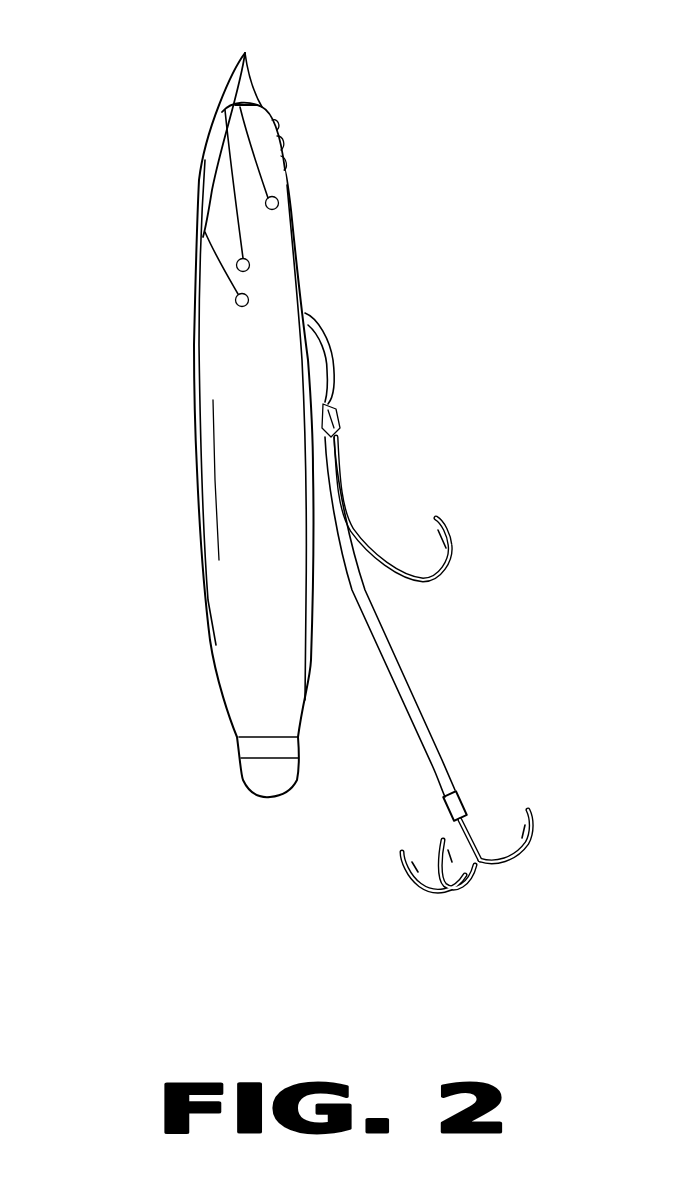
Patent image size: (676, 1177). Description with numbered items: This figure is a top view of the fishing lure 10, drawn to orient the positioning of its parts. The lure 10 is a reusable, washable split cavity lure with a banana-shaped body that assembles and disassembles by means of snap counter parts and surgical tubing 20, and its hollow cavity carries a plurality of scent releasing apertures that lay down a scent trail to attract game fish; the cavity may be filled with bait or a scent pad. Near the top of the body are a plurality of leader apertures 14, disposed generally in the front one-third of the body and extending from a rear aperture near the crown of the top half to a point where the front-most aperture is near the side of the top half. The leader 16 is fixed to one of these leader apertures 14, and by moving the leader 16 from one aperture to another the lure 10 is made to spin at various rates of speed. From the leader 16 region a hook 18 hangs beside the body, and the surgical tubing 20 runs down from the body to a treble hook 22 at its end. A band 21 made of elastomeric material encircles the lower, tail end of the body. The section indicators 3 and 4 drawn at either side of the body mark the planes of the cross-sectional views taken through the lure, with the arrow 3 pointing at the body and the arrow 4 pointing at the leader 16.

The section view indicator for FIG. 3 is at (187, 345).
The section view indicator for FIG. 4 is at (333, 340).
The fishing lure 10 is at (197, 505).
The leader apertures 14 is at (244, 160).
The leader 16 is at (318, 317).
The hook 18 is at (450, 560).
The surgical tubing 20 is at (417, 705).
The band 21 is at (237, 740).
The treble hook 22 is at (493, 863).